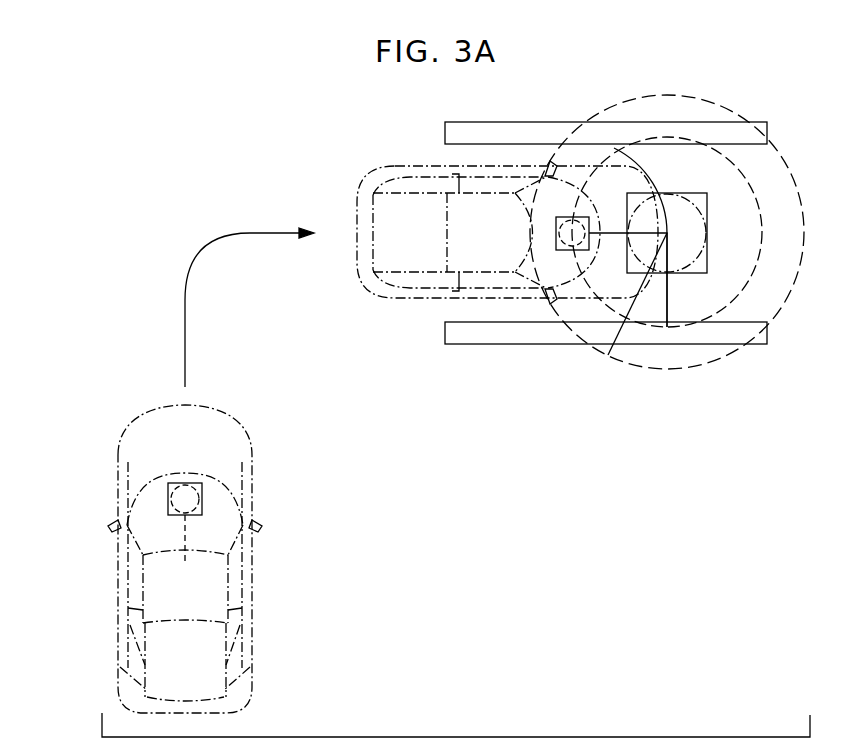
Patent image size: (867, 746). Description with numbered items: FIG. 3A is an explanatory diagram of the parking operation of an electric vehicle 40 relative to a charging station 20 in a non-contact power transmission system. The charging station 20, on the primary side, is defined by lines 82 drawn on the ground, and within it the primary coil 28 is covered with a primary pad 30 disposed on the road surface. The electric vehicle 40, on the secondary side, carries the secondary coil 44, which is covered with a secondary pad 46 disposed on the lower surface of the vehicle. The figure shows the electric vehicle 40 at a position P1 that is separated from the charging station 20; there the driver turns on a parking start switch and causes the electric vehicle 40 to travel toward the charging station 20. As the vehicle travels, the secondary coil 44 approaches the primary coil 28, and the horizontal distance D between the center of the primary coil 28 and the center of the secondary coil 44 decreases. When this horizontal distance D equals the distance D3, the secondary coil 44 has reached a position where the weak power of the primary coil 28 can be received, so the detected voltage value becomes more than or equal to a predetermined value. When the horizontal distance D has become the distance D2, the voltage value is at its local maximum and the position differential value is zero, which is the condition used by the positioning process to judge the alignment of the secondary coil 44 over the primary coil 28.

The charging station 20 is at (758, 290).
The primary coil 28 is at (707, 233).
The primary pad 30 is at (655, 193).
The electric vehicle 40 is at (396, 168).
The secondary coil 44 is at (548, 240).
The secondary pad 46 is at (556, 221).
The lines 82 is at (528, 122).
The horizontal distance D is at (607, 232).
The distance D2 is at (668, 289).
The distance D3 is at (618, 330).
The position P1 is at (272, 573).